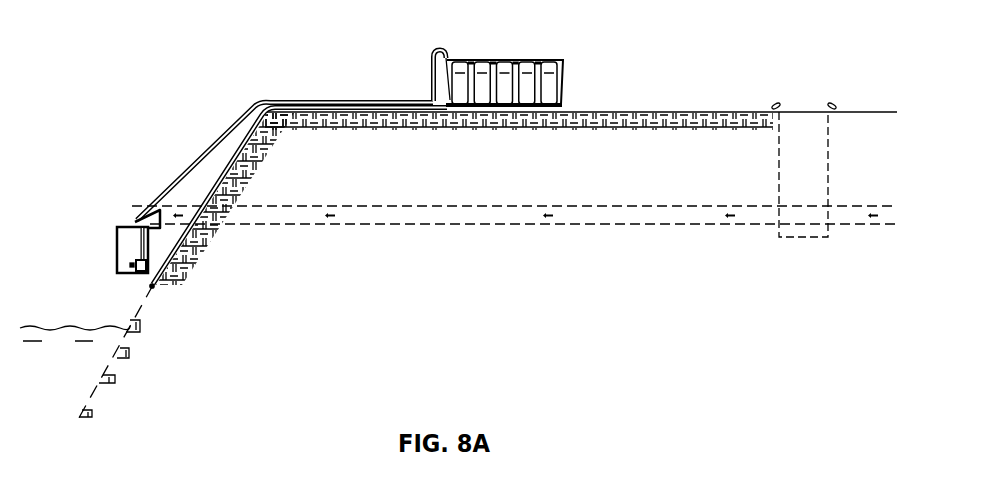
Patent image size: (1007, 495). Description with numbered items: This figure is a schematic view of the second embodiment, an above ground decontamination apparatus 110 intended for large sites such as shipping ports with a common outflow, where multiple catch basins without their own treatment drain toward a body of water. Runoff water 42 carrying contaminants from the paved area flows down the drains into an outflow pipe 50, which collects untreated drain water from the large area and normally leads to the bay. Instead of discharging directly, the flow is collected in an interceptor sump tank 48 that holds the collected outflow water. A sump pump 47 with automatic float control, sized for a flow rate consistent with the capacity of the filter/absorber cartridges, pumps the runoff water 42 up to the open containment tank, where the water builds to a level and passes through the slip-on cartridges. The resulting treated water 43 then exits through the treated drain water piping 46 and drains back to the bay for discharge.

The above ground decontamination apparatus 110 is at (508, 43).
The runoff water 42 is at (549, 224).
The outflow pipe 50 is at (398, 225).
The treated drain water piping 46 is at (212, 146).
The interceptor sump tank 48 is at (117, 262).
The sump pump 47 is at (142, 278).
The treated water 43 is at (156, 288).